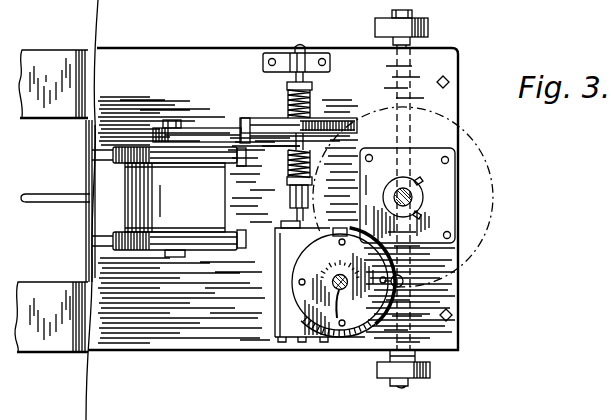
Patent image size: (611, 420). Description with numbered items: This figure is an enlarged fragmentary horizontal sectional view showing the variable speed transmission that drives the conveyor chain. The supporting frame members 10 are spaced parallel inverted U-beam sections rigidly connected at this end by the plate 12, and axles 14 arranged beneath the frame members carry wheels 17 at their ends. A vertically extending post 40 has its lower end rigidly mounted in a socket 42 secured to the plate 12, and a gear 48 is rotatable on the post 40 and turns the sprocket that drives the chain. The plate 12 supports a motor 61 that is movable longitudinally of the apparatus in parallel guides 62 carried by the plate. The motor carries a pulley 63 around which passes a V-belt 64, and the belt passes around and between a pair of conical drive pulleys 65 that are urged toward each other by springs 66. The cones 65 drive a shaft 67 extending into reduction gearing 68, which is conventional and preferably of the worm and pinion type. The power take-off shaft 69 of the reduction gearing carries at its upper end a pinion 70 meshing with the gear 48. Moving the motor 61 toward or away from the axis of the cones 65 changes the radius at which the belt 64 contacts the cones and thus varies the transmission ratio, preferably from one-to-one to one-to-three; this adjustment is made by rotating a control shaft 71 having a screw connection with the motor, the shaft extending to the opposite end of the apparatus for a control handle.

The supporting frame members 10 is at (27, 124).
The plate 12 is at (139, 58).
The axles 14 is at (393, 45).
The wheels 17 is at (430, 28).
The post 40 is at (395, 197).
The socket 42 is at (421, 206).
The gear 48 is at (494, 170).
The motor 61 is at (175, 197).
The guides 62 is at (92, 150).
The pulley 63 is at (193, 130).
The V-belt 64 is at (218, 132).
The conical drive pulleys 65 is at (318, 119).
The springs 66 is at (290, 97).
The shaft 67 is at (292, 212).
The reduction gearing 68 is at (276, 269).
The power take-off shaft 69 is at (347, 282).
The pinion 70 is at (330, 266).
The control shaft 71 is at (54, 194).